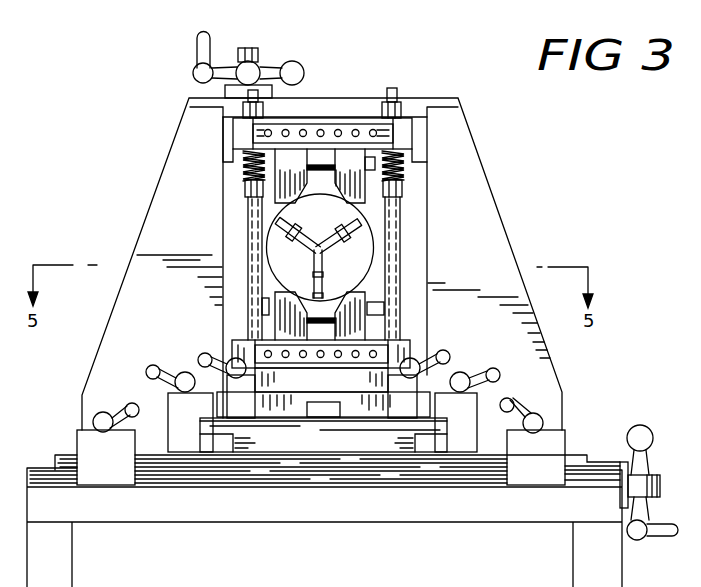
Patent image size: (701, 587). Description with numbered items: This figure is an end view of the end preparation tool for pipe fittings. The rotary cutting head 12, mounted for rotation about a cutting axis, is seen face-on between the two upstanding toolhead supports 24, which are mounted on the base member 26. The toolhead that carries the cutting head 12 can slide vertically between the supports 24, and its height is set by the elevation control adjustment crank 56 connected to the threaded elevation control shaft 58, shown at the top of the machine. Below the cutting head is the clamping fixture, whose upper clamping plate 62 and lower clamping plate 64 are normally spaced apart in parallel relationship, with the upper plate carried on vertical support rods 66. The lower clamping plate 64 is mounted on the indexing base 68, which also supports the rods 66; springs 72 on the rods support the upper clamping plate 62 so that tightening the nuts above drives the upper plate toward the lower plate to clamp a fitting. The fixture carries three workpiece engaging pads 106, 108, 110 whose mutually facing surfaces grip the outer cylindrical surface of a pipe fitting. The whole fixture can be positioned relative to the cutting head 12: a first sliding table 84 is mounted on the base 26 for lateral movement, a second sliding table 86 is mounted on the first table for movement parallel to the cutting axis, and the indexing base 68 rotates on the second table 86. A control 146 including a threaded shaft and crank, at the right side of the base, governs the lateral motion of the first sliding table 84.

The rotary cutting head 12 is at (350, 220).
The toolhead supports 24 is at (499, 211).
The base member 26 is at (399, 514).
The elevation control adjustment crank 56 is at (300, 68).
The threaded elevation control shaft 58 is at (253, 49).
The upper clamping plate 62 is at (242, 135).
The lower clamping plate 64 is at (235, 347).
The support rods 66 is at (250, 238).
The indexing base 68 is at (387, 408).
The springs 72 is at (248, 172).
The first sliding table 84 is at (290, 462).
The second sliding table 86 is at (200, 420).
The workpiece engaging pad 106 is at (355, 327).
The workpiece engaging pad 108 is at (262, 298).
The workpiece engaging pad 110 is at (384, 302).
The control 146 is at (646, 424).